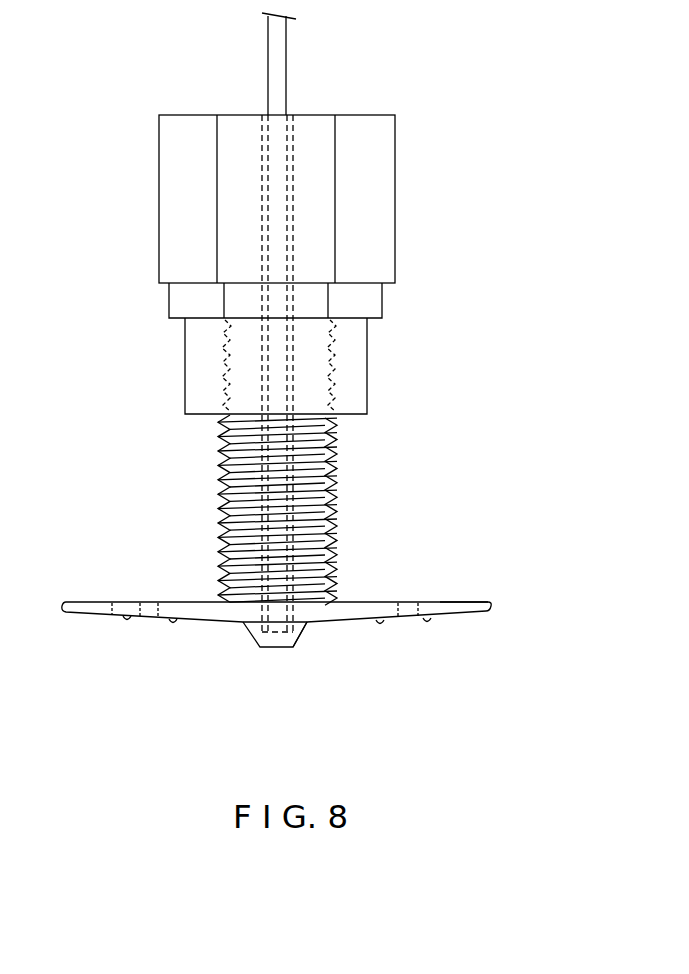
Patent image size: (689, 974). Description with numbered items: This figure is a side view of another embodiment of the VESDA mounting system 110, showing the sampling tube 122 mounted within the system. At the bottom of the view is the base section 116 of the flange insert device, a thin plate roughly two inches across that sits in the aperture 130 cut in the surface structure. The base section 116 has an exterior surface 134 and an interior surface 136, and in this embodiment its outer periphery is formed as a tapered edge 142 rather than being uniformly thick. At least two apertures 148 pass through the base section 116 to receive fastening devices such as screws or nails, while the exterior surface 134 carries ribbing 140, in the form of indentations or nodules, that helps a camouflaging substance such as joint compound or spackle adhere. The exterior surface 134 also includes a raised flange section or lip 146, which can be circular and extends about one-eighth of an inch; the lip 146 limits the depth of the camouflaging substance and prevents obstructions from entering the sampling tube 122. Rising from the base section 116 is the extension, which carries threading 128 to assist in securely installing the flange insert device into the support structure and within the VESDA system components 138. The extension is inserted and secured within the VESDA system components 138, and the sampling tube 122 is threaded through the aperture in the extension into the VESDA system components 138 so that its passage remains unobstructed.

The system 110 is at (468, 245).
The base section 116 is at (453, 603).
The sampling tube 122 is at (277, 70).
The threading 128 is at (330, 352).
The aperture 130 is at (262, 648).
The exterior surface 134 is at (457, 617).
The interior surface 136 is at (97, 602).
The VESDA system components 138 is at (388, 188).
The ribbing 140 is at (173, 625).
The tapered edge 142 is at (112, 615).
The lip 146 is at (305, 628).
The apertures 148 is at (410, 603).